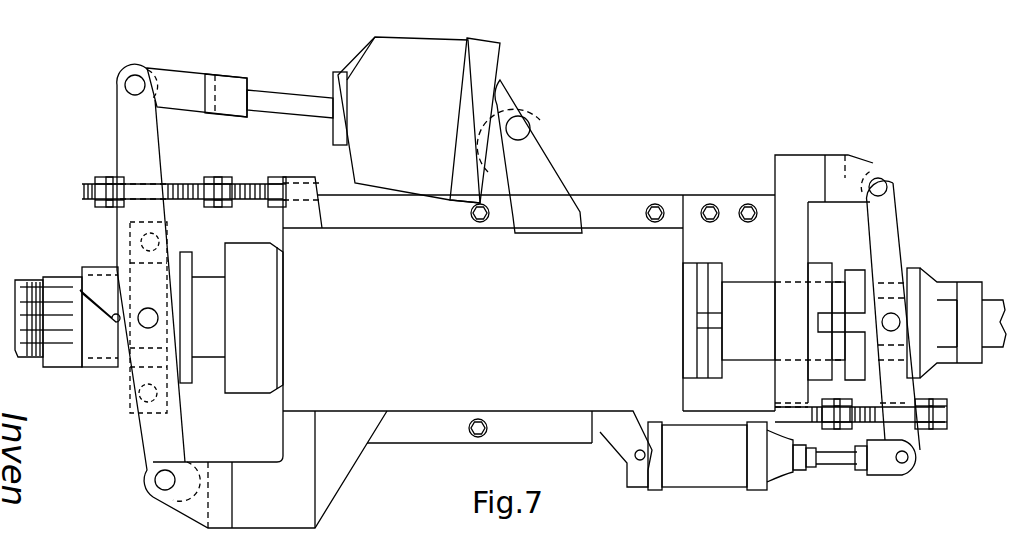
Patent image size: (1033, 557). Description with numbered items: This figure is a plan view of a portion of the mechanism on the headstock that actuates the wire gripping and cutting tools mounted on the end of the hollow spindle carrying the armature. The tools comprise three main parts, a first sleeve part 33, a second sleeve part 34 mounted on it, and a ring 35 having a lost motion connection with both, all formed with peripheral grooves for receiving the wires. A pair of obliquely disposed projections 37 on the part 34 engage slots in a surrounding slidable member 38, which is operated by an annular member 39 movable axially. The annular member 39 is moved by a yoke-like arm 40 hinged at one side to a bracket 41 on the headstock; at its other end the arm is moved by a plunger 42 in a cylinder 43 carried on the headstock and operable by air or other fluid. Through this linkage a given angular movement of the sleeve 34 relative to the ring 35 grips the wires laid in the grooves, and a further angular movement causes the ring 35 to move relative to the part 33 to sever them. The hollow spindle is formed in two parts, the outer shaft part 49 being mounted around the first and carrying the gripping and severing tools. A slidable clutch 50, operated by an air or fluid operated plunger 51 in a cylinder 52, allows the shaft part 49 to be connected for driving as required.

The first sleeve part 33 is at (21, 352).
The sleeve part 34 is at (57, 354).
The ring 35 is at (33, 358).
The obliquely disposed projections 37 is at (110, 320).
The slidable member 38 is at (107, 361).
The annular member 39 is at (163, 412).
The yoke-like arm 40 is at (155, 148).
The bracket 41 is at (182, 506).
The plunger 42 is at (295, 100).
The cylinder 43 is at (413, 182).
The shaft part 49 is at (745, 292).
The slidable clutch 50 is at (852, 310).
The plunger 51 is at (843, 458).
The cylinder 52 is at (713, 478).